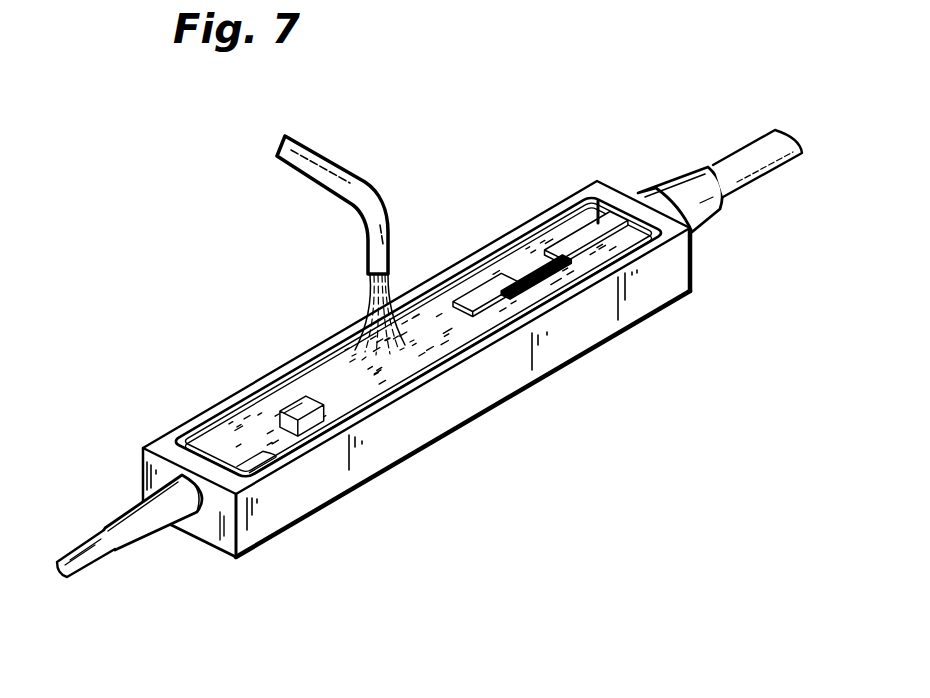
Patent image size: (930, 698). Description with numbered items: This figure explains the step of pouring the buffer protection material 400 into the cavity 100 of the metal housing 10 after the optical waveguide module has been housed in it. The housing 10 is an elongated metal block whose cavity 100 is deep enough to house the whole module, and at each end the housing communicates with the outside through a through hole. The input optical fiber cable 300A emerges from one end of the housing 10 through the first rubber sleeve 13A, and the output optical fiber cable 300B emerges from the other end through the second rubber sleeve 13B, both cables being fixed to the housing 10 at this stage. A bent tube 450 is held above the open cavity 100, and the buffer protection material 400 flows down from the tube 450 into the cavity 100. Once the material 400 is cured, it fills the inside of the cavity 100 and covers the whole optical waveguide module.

The housing 10 is at (440, 413).
The cavity 100 is at (578, 221).
The first rubber sleeve 13A is at (188, 515).
The second rubber sleeve 13B is at (712, 208).
The input optical fiber cable 300A is at (88, 563).
The output optical fiber cable 300B is at (752, 167).
The buffer protection material 400 is at (368, 303).
The tube 450 is at (330, 175).